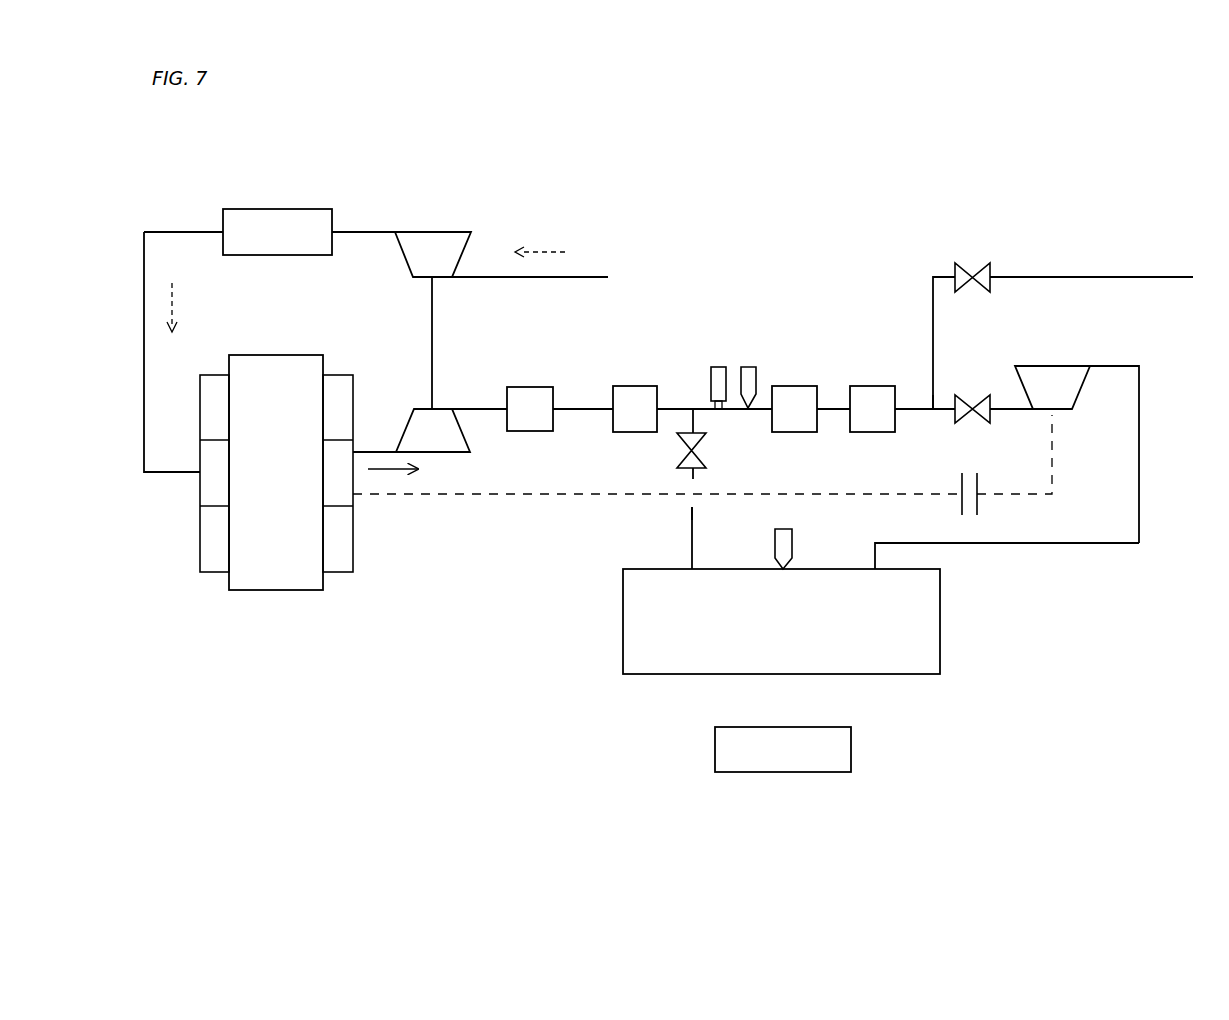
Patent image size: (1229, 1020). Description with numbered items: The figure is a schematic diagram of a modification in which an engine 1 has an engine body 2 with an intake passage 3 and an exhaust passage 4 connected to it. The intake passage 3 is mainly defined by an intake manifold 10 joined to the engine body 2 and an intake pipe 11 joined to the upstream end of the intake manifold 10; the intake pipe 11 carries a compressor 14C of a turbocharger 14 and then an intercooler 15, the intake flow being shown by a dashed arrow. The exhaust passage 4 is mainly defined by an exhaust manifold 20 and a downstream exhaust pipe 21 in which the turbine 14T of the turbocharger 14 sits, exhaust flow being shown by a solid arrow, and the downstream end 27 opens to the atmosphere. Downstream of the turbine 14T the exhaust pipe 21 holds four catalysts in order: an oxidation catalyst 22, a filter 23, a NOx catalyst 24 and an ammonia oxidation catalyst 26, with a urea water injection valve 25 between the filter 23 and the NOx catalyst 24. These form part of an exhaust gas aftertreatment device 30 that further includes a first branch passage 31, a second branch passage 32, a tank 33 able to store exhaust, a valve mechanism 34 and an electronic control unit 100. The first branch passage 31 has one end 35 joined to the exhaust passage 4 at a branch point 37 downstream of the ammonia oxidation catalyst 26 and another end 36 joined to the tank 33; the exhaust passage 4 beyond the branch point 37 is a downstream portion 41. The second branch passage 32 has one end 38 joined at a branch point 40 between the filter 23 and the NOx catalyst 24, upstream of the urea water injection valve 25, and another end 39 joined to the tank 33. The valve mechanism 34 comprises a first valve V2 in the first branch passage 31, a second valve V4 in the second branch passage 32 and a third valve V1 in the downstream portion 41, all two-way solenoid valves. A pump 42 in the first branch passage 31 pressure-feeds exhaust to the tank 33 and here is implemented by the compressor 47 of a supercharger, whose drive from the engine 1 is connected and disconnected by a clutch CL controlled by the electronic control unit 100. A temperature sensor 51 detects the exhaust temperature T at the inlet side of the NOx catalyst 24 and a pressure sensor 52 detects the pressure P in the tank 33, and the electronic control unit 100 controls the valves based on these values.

The engine 1 is at (186, 160).
The engine body 2 is at (277, 590).
The intake passage 3 is at (163, 224).
The exhaust passage 4 is at (598, 404).
The intake manifold 10 is at (210, 572).
The intake pipe 11 is at (195, 230).
The turbocharger 14 is at (480, 324).
The compressor 14C is at (455, 232).
The turbine 14T is at (453, 452).
The intercooler 15 is at (273, 209).
The exhaust manifold 20 is at (338, 572).
The exhaust pipe 21 is at (568, 408).
The oxidation catalyst 22 is at (529, 387).
The filter 23 is at (642, 386).
The NOx catalyst 24 is at (797, 386).
The urea water injection valve 25 is at (711, 367).
The ammonia oxidation catalyst 26 is at (871, 386).
The downstream end 27 is at (1157, 277).
The exhaust gas aftertreatment device 30 is at (784, 373).
The first branch passage 31 is at (1139, 449).
The second branch passage 32 is at (694, 535).
The tank 33 is at (941, 619).
The valve mechanism 34 is at (980, 306).
The one end 35 is at (964, 417).
The other end 36 is at (873, 560).
The branch point 37 is at (930, 406).
The one end 38 is at (688, 451).
The other end 39 is at (690, 552).
The branch point 40 is at (691, 405).
The downstream portion 41 is at (1053, 277).
The pump 42 is at (1052, 366).
The compressor 47 is at (1040, 366).
The temperature sensor 51 is at (754, 367).
The pressure sensor 52 is at (790, 533).
The electronic control unit 100 is at (782, 778).
The third valve V1 is at (1004, 226).
The first valve V2 is at (938, 437).
The second valve V4 is at (667, 447).
The exhaust temperature T is at (748, 350).
The pressure P is at (785, 519).
The clutch CL is at (702, 465).